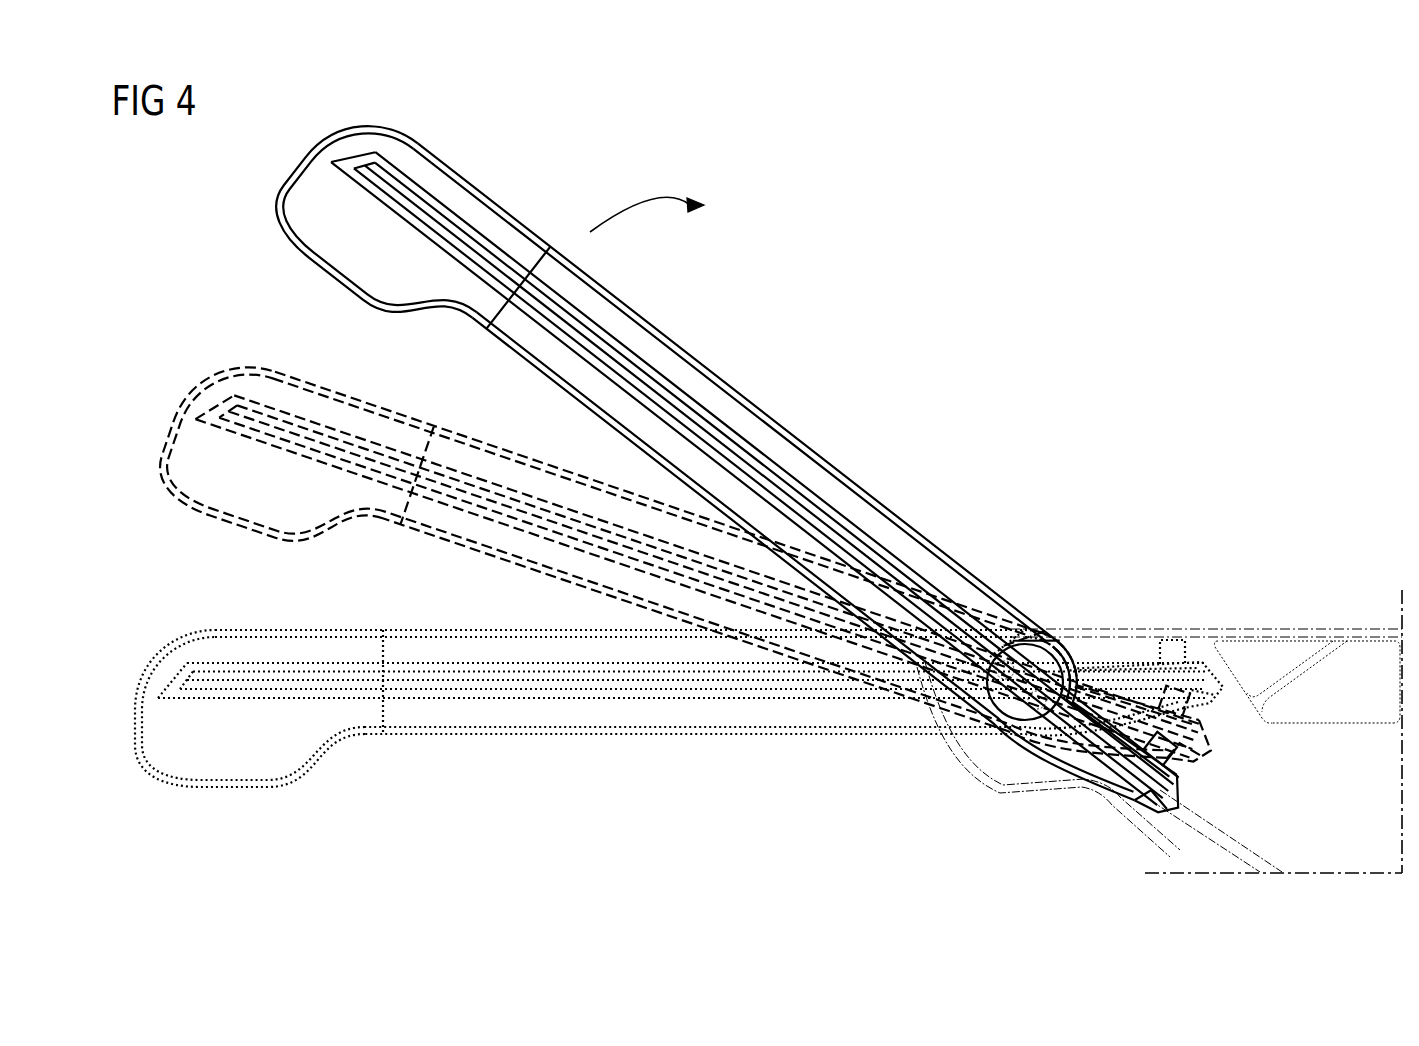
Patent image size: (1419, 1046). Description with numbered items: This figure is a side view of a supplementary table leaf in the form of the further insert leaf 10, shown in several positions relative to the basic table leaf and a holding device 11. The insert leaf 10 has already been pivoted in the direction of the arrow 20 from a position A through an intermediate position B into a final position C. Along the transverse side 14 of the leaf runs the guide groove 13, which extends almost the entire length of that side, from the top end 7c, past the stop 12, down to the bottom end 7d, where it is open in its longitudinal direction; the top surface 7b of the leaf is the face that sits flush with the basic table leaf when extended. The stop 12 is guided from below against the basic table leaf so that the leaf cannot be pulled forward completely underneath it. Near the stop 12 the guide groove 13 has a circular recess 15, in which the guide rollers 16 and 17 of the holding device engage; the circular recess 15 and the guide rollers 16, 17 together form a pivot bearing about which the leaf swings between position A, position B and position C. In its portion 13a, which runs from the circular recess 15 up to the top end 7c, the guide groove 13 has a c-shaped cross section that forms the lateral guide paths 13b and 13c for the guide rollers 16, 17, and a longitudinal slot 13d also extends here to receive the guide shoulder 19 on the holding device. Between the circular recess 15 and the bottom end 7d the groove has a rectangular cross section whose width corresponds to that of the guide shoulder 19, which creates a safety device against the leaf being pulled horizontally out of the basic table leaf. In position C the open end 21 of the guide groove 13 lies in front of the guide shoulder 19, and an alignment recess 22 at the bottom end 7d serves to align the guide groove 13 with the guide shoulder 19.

The top end of the insert leaf 7c is at (348, 143).
The position C is at (742, 504).
The arrow 20 is at (618, 208).
The lateral guide path 13b is at (610, 340).
The portion of the guide groove 13a is at (647, 383).
The guide groove 13 is at (755, 469).
The lateral guide path 13c is at (568, 342).
The longitudinal slot 13d is at (603, 372).
The insert leaf 10 is at (755, 504).
The transverse side of the insert leaf 14 is at (840, 496).
The top surface of the insert leaf 7b is at (898, 530).
The position B is at (215, 388).
The position A is at (186, 648).
The guide roller 16 is at (1018, 640).
The circular recess 15 is at (1058, 655).
The stop 12 is at (1166, 640).
The guide roller 17 is at (1022, 705).
The open end of the guide groove 21 is at (1185, 790).
The guide shoulder 19 is at (1245, 848).
The alignment recess 22 is at (1150, 812).
The bottom end of the insert leaf 7d is at (1176, 820).
The holding device 11 is at (1356, 855).